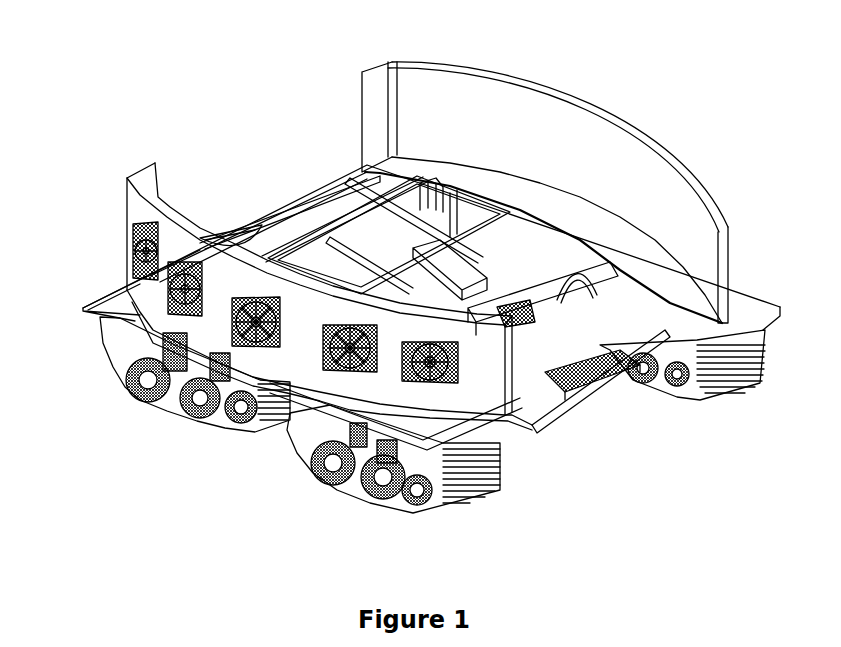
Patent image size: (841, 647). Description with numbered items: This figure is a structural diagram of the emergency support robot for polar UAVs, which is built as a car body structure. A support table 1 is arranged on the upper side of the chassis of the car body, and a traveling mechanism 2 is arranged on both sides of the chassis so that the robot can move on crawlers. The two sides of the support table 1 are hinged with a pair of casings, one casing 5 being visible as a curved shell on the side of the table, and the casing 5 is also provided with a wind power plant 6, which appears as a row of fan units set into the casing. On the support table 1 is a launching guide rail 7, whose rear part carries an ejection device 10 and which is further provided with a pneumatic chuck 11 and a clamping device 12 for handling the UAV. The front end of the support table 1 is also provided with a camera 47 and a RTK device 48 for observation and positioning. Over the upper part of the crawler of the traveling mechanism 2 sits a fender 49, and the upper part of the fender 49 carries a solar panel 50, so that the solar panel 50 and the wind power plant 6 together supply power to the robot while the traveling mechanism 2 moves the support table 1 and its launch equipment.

The support table 1 is at (655, 323).
The traveling mechanism 2 is at (727, 387).
The casing 5 is at (482, 387).
The wind power plant 6 is at (432, 382).
The launching guide rail 7 is at (317, 202).
The ejection device 10 is at (602, 377).
The pneumatic chuck 11 is at (462, 240).
The clamping device 12 is at (540, 400).
The camera 47 is at (232, 238).
The RTK device 48 is at (355, 170).
The fender 49 is at (117, 288).
The solar panel 50 is at (405, 487).